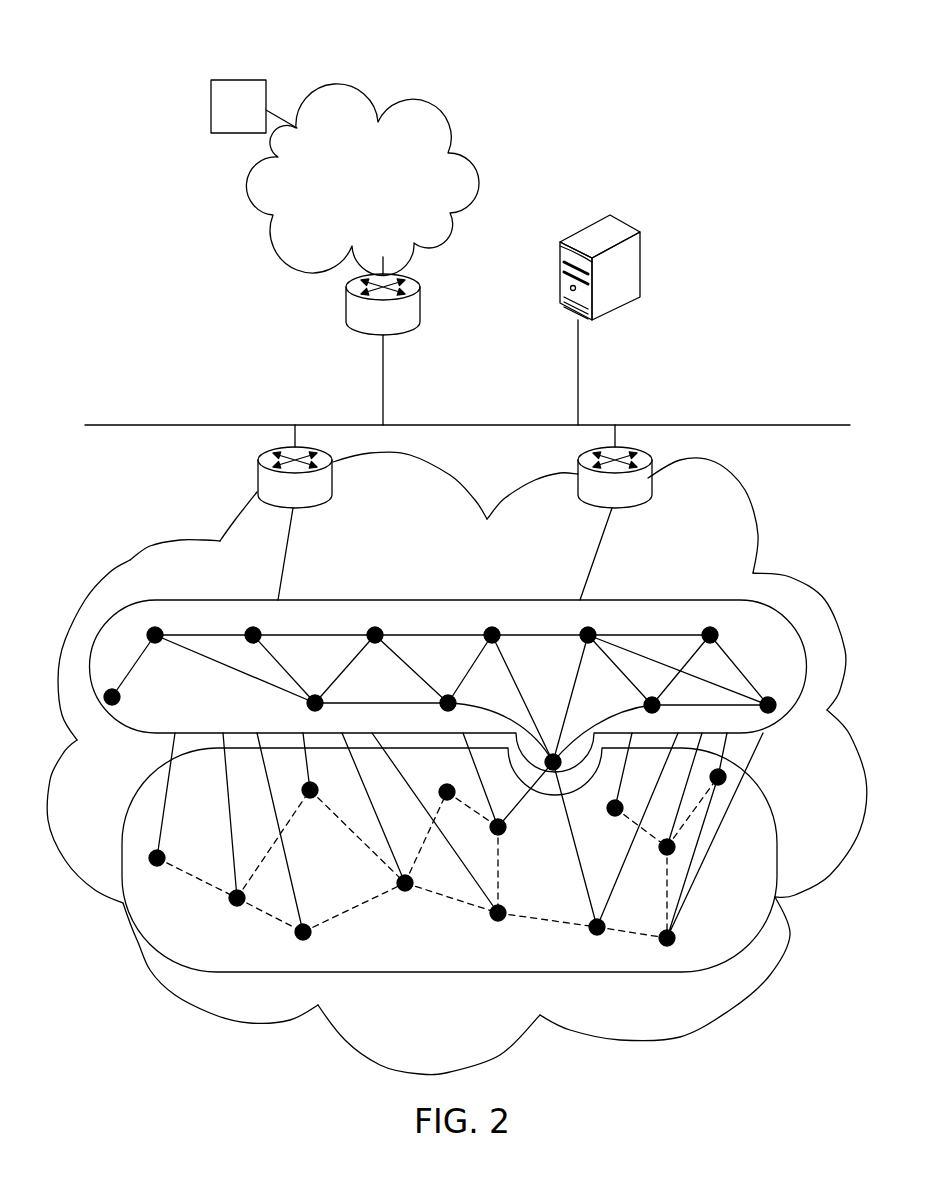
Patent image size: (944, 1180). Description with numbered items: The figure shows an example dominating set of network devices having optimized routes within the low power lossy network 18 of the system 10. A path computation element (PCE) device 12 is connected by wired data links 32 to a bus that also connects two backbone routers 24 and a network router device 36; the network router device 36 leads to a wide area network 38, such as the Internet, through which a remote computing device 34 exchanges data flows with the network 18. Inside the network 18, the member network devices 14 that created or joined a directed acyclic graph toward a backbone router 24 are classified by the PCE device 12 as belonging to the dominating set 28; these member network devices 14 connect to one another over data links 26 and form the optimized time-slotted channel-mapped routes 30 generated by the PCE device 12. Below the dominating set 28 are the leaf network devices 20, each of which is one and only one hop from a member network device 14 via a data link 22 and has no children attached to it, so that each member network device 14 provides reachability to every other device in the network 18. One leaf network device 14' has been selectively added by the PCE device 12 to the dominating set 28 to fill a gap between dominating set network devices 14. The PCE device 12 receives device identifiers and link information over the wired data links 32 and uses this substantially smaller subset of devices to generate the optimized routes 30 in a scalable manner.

The system 10 is at (153, 68).
The path computation element (PCE) device 12 is at (641, 262).
The member network device 14 is at (440, 651).
The leaf network device selectively added to dominating set 14' is at (543, 726).
The low power lossy network 18 is at (156, 547).
The leaf network device 20 is at (150, 861).
The data link 22 is at (166, 781).
The backbone router 24 is at (335, 488).
The data link 26 is at (203, 632).
The dominating set 28 is at (442, 598).
The optimized routes 30 is at (765, 603).
The wired data link 32 is at (383, 400).
The remote computing device 34 is at (236, 80).
The network router device 36 is at (424, 305).
The wide area network 38 is at (452, 137).